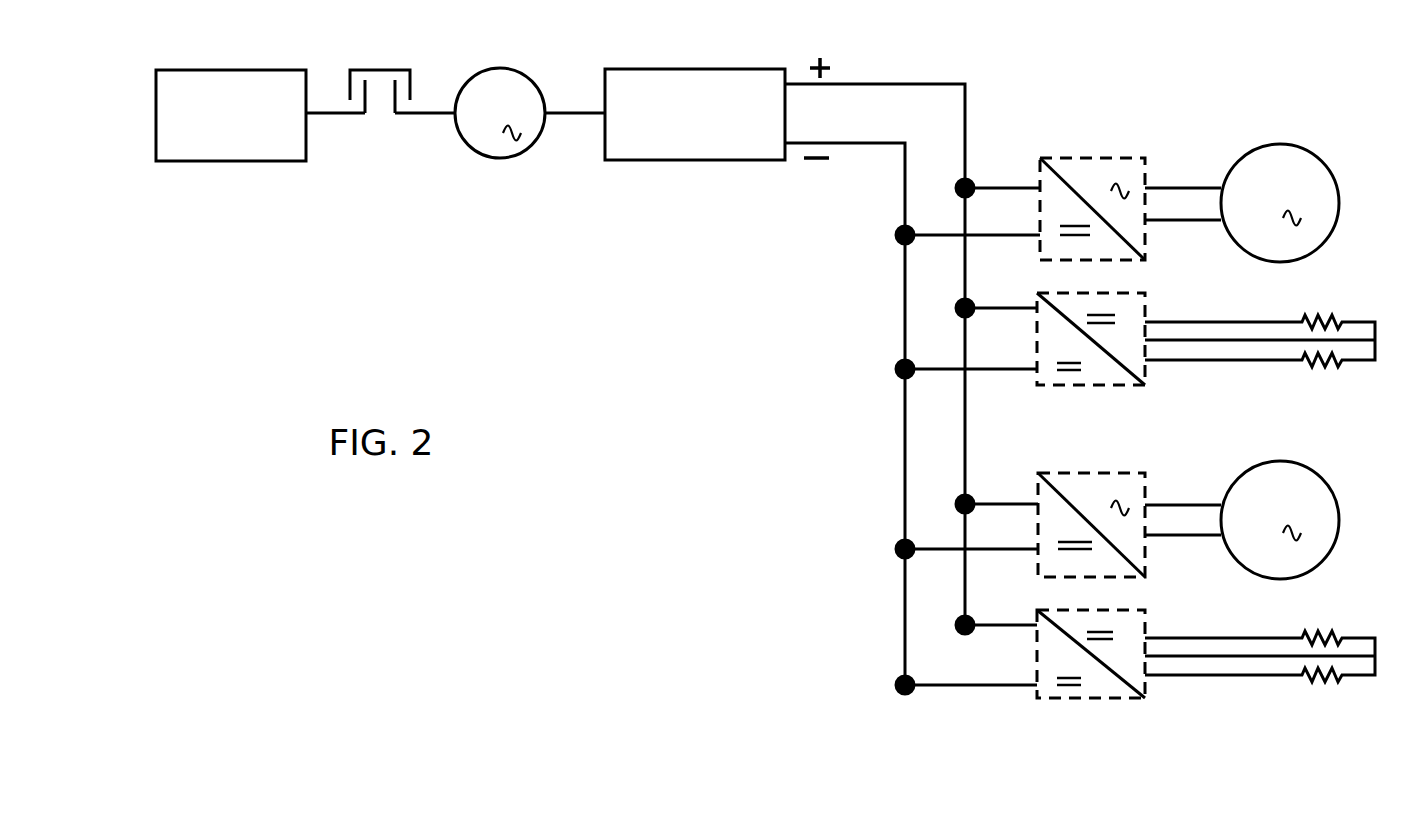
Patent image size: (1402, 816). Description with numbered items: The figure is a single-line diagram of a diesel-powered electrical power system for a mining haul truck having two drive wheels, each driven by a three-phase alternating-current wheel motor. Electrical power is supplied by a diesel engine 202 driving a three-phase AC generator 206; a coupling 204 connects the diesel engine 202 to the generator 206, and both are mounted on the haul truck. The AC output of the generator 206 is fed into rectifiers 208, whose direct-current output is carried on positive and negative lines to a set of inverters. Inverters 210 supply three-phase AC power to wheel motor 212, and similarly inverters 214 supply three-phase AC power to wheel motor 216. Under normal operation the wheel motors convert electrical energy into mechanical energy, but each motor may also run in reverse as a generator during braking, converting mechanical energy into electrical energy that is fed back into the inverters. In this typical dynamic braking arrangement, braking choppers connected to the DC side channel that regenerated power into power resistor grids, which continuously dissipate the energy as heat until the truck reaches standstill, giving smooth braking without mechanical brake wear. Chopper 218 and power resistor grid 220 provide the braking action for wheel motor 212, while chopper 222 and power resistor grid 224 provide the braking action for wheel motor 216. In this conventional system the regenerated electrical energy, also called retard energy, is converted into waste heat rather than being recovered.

The diesel engine 202 is at (231, 101).
The coupling 204 is at (380, 111).
The generator 206 is at (500, 100).
The rectifiers 208 is at (717, 101).
The inverters 210 is at (1092, 196).
The wheel motor 212 is at (1280, 190).
The inverters 214 is at (1091, 512).
The wheel motor 216 is at (1280, 506).
The chopper 218 is at (1091, 353).
The power resistor grid 220 is at (1260, 359).
The chopper 222 is at (1091, 670).
The power resistor grid 224 is at (1260, 674).